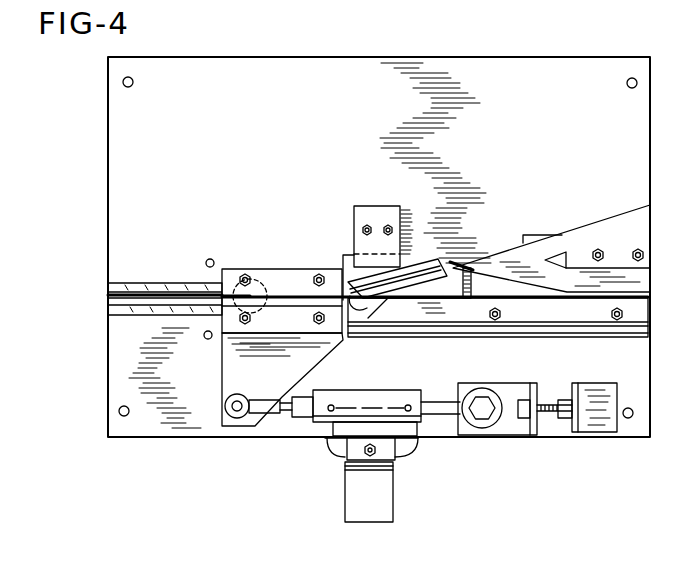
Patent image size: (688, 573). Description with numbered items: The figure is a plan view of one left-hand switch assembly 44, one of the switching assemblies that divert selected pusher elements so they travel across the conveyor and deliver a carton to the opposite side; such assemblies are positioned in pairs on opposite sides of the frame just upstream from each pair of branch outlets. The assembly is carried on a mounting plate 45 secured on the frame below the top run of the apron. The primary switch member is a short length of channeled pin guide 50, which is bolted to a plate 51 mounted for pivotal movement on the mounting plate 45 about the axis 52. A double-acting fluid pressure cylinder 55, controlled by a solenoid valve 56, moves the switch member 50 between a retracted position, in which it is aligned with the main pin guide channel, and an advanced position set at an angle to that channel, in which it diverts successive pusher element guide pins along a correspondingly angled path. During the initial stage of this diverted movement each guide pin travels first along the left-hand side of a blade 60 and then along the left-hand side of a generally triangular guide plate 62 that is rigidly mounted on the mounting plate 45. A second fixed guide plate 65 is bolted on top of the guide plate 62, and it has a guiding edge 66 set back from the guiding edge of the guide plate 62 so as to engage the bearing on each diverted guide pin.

The switch assembly 44 is at (222, 441).
The mounting plate 45 is at (547, 80).
The channeled pin guide 50 is at (280, 285).
The plate 51 is at (228, 386).
The axis 52 is at (245, 300).
The double-acting fluid pressure cylinder 55 is at (338, 398).
The solenoid valve 56 is at (382, 505).
The blade 60 is at (350, 280).
The guide plate 62 is at (513, 258).
The second fixed guide plate 65 is at (606, 243).
The guiding edge 66 is at (580, 245).